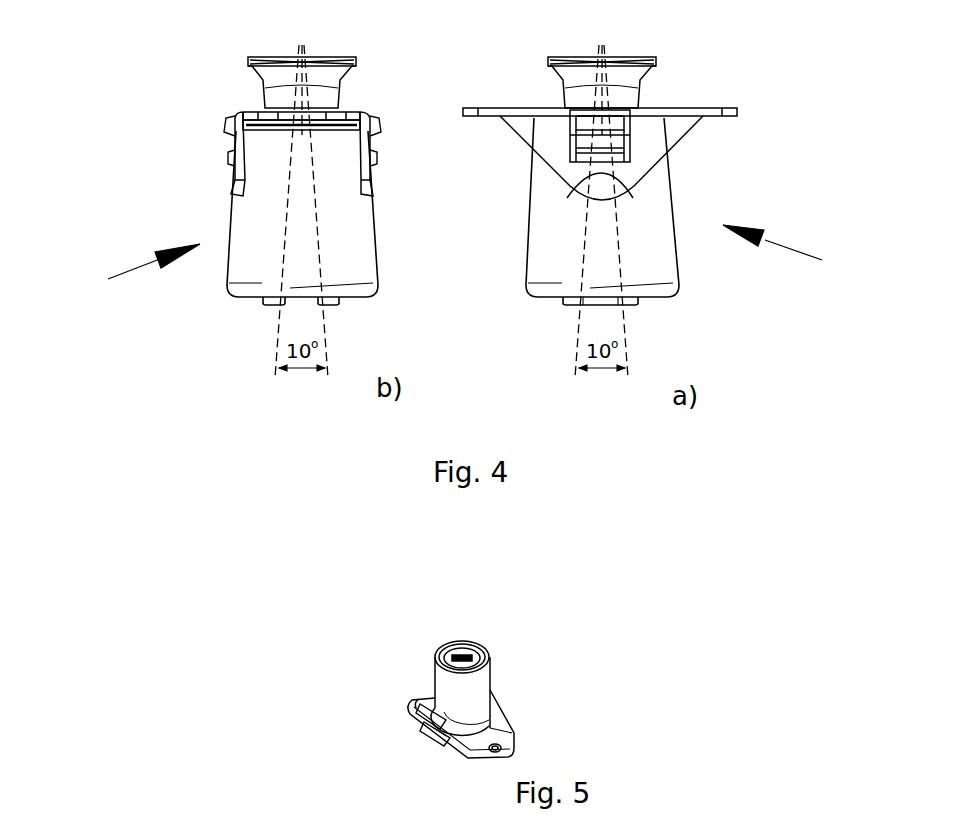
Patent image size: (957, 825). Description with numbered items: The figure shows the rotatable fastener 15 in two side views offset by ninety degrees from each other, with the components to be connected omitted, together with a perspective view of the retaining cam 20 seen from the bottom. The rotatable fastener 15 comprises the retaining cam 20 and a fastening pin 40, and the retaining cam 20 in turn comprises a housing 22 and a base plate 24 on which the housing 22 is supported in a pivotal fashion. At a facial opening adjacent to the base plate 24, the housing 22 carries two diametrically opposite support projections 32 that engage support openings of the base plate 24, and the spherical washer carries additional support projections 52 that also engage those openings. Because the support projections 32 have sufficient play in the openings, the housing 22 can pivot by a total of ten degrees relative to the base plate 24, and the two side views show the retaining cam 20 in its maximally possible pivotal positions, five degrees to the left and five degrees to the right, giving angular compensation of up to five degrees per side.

In FIG. 4, the rotatable fastener 15 is at (469, 259).
In FIG. 5, the retaining cam 20 is at (512, 661).
In FIG. 4, the housing 22 is at (262, 218).
In FIG. 4, the base plate 24 is at (372, 185).
In FIG. 5, the base plate 24 is at (505, 722).
In FIG. 4, the support projections 32 is at (385, 147).
In FIG. 5, the support projections 32 is at (433, 714).
In FIG. 4, the fastening pin 40 is at (278, 93).
In FIG. 4, the support projections 52 is at (372, 118).
In FIG. 5, the support projections 52 is at (437, 745).